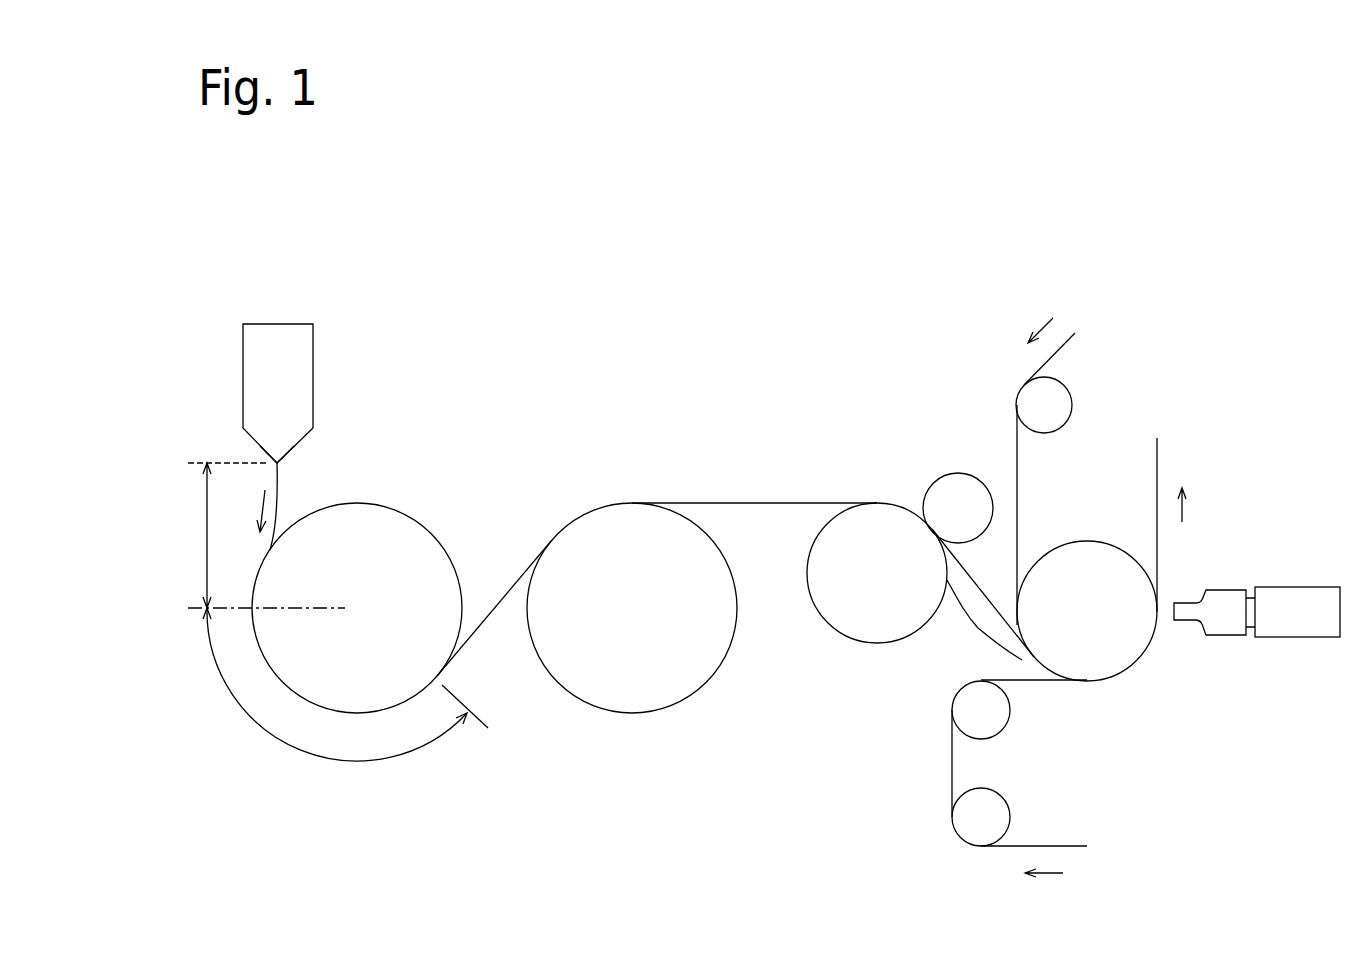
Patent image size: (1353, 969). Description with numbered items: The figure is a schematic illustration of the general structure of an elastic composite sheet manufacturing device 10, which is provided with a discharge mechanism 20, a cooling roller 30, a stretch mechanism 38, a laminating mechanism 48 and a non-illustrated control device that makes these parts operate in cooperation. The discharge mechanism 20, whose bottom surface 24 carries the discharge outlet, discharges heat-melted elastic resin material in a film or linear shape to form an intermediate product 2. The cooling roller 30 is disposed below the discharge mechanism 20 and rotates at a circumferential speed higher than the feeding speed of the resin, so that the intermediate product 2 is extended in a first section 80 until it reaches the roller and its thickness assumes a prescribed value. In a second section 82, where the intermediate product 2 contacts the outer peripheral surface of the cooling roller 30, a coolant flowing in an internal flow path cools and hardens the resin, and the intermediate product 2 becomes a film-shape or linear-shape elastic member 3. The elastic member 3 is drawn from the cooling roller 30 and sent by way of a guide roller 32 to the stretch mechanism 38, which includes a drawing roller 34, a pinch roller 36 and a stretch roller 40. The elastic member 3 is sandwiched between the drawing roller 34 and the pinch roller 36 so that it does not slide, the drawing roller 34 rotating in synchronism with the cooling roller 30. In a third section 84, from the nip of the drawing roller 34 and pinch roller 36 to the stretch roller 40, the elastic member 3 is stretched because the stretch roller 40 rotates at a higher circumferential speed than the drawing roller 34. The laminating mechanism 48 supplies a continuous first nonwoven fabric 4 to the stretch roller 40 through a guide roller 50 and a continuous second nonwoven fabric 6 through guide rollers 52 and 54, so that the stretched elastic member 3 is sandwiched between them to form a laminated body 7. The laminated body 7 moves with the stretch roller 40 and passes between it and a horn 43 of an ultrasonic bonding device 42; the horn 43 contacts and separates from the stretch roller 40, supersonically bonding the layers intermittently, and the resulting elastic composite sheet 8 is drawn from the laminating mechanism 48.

The elastic composite sheet manufacturing device 10 is at (1230, 188).
The discharge mechanism 20 is at (313, 375).
The bottom surface 24 is at (285, 470).
The intermediate product 2 is at (280, 489).
The cooling roller 30 is at (398, 510).
The guide roller 32 is at (632, 713).
The elastic member 3 is at (493, 609).
The drawing roller 34 is at (875, 644).
The pinch roller 36 is at (957, 472).
The stretch mechanism 38 is at (899, 431).
The third section 84 is at (978, 628).
The stretch roller 40 is at (1084, 542).
The guide roller 50 is at (1072, 401).
The first nonwoven fabric 4 is at (1066, 345).
The elastic composite sheet 8 is at (1157, 460).
The horn 43 is at (1182, 603).
The ultrasonic bonding device 42 is at (1303, 558).
The laminated body 7 is at (1137, 660).
The guide roller 54 is at (1010, 713).
The guide roller 52 is at (1010, 815).
The second nonwoven fabric 6 is at (1073, 845).
The laminating mechanism 48 is at (1162, 724).
The first section 80 is at (206, 532).
The second section 82 is at (298, 748).